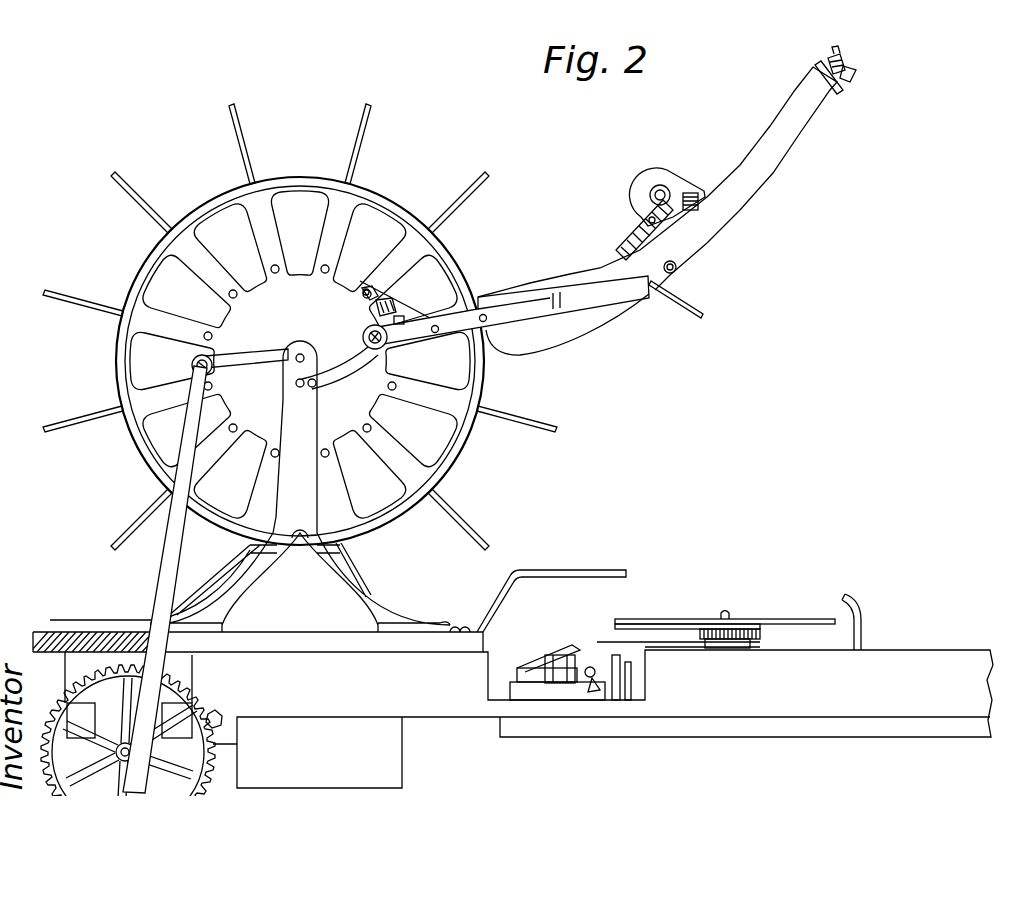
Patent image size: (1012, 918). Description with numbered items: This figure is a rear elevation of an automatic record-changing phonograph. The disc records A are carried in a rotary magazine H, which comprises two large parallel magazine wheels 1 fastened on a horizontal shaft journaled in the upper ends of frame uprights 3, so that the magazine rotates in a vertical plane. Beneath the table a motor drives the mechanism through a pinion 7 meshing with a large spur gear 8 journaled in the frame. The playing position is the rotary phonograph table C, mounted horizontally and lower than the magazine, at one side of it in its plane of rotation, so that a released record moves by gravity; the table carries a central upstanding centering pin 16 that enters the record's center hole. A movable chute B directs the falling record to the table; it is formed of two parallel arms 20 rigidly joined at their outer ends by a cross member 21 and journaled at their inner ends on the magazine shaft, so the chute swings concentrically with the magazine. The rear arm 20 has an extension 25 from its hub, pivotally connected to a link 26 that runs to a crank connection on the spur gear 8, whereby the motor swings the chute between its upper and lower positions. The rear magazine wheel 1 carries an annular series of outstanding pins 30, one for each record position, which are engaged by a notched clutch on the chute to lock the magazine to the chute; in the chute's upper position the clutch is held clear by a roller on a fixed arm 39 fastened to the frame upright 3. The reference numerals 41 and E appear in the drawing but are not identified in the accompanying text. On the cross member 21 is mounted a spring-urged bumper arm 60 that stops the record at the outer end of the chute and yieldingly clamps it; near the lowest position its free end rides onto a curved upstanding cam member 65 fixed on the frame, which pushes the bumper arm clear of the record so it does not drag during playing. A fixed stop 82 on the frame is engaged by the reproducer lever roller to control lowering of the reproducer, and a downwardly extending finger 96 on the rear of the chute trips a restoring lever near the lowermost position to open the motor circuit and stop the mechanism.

The magazine wheel 1 is at (473, 375).
The frame upright 3 is at (303, 483).
The pinion 7 is at (216, 718).
The spur gear 8 is at (192, 697).
The centering pin 16 is at (725, 610).
The chute arm 20 is at (770, 165).
The cross member 21 is at (846, 82).
The extension 25 is at (245, 353).
The link 26 is at (168, 560).
The pin 30 is at (372, 426).
The fixed arm 39 is at (347, 373).
The pawl device 41 is at (400, 312).
The bumper arm 60 is at (845, 58).
The cam member 65 is at (862, 628).
The fixed stop 82 is at (533, 570).
The finger 96 is at (691, 298).
The disc record A is at (470, 188).
The chute B is at (698, 232).
The phonograph table C is at (786, 618).
The bracket E is at (679, 176).
The rotary magazine H is at (300, 354).